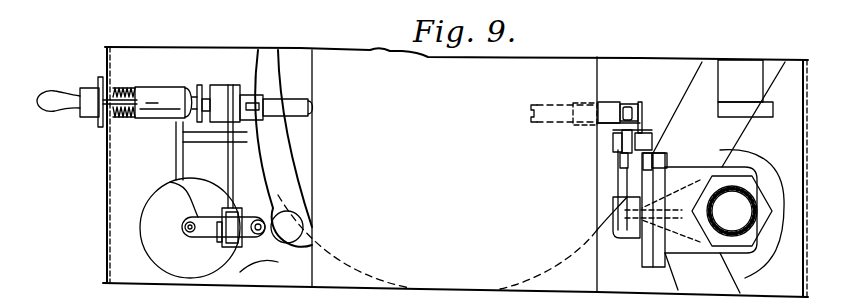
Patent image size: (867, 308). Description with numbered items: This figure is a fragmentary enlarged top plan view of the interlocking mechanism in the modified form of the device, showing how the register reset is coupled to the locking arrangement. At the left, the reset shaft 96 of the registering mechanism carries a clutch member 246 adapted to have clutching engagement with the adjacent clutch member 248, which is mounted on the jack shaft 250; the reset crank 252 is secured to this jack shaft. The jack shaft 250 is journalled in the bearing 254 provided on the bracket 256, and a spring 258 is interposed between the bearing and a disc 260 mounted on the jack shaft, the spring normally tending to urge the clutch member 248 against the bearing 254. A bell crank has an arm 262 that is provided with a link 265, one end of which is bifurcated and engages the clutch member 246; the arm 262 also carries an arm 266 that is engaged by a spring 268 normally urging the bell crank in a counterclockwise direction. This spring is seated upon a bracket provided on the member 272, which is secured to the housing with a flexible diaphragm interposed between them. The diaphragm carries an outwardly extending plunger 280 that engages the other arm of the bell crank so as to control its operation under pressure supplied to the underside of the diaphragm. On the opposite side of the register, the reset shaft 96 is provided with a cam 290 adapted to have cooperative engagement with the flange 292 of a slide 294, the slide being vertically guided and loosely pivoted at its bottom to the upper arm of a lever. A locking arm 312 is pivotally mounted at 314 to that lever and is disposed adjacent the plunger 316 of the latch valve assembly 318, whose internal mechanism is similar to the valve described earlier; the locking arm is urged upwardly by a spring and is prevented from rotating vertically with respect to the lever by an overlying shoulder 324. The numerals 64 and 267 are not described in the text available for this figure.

The bearing ring 64 is at (745, 217).
The reset shaft 96 is at (294, 98).
The clutch member 246 is at (222, 86).
The clutch member 248 is at (201, 84).
The jack shaft 250 is at (126, 95).
The reset crank 252 is at (43, 110).
The bearing 254 is at (155, 99).
The bracket 256 is at (174, 147).
The spring 258 is at (91, 80).
The disc 260 is at (113, 117).
The arm 262 is at (240, 246).
The link 265 is at (233, 167).
The arm 266 is at (267, 268).
The link rod 267 is at (168, 171).
The spring 268 is at (245, 222).
The member 272 is at (157, 231).
The plunger 280 is at (187, 229).
The cam 290 is at (614, 104).
The flange 292 is at (642, 108).
The slide 294 is at (648, 130).
The locking arm 312 is at (618, 188).
The pivot 314 is at (618, 162).
The plunger 316 is at (670, 170).
The latch valve assembly 318 is at (757, 233).
The overlying shoulder 324 is at (618, 170).